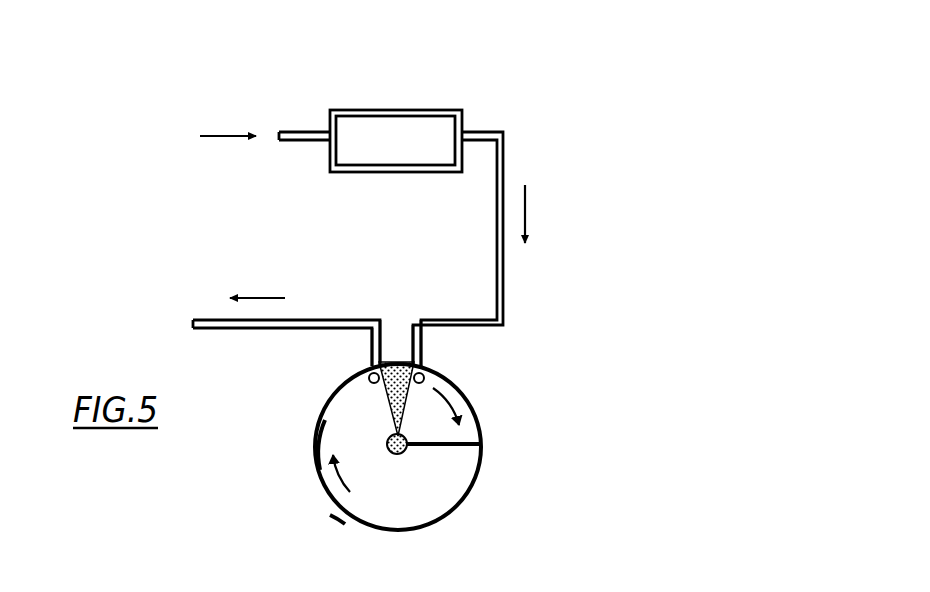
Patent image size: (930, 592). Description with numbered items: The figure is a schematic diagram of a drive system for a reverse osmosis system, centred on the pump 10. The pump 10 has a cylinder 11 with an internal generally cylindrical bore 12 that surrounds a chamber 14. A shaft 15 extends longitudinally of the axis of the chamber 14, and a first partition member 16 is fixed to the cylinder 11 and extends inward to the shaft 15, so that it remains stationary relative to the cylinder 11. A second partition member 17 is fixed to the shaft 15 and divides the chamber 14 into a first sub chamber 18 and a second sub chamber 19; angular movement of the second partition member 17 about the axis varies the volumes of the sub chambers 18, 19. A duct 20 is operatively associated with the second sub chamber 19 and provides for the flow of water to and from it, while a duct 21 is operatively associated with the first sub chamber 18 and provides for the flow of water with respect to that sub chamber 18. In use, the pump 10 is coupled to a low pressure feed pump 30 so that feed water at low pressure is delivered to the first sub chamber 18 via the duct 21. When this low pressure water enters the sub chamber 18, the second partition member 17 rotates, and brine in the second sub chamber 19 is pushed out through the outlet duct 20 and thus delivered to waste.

The pump 10 is at (535, 418).
The cylinder 11 is at (415, 527).
The internal generally cylindrical bore 12 is at (320, 455).
The chamber 14 is at (338, 505).
The shaft 15 is at (400, 454).
The first partition member 16 is at (378, 398).
The second partition member 17 is at (447, 446).
The first sub chamber 18 is at (443, 439).
The second sub chamber 19 is at (367, 439).
The duct 20 is at (370, 372).
The duct 21 is at (425, 367).
The low pressure feed pump 30 is at (425, 128).